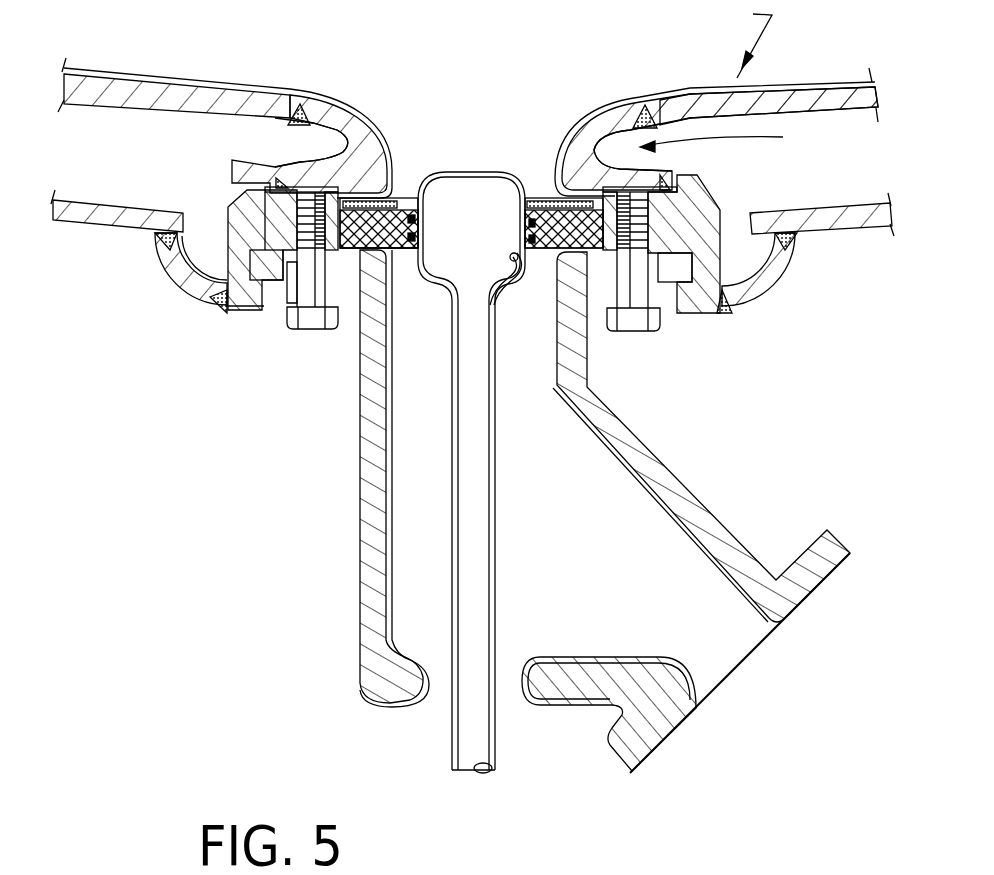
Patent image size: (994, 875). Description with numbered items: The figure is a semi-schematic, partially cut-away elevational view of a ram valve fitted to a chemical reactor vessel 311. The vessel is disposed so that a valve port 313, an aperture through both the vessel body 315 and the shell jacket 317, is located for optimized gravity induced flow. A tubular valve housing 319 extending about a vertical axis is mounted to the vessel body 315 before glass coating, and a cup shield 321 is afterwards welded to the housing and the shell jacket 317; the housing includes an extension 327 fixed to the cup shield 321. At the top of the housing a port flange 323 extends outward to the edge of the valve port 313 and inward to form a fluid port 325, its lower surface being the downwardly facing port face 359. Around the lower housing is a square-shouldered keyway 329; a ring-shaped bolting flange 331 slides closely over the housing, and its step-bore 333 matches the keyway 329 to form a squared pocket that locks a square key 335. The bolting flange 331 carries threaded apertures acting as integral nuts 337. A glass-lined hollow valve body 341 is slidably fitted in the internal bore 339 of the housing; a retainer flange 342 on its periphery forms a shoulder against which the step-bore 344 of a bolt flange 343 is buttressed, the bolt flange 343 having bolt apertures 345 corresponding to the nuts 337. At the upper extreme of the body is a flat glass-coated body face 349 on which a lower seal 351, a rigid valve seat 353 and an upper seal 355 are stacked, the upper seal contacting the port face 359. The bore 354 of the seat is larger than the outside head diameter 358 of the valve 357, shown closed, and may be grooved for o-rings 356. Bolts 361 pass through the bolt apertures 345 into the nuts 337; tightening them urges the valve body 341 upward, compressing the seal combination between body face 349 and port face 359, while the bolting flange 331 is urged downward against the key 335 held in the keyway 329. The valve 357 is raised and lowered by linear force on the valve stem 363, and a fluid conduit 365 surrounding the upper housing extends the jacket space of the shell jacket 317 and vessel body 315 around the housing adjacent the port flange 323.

The vessel 311 is at (745, 41).
The valve port 313 is at (643, 118).
The vessel body 315 is at (108, 78).
The shell jacket 317 is at (82, 218).
The valve housing 319 is at (335, 141).
The cup shield 321 is at (168, 258).
The port flange 323 is at (340, 110).
The fluid port 325 is at (384, 118).
The extension 327 is at (664, 168).
The keyway 329 is at (770, 287).
The bolting flange 331 is at (217, 297).
The step-bore 333 is at (233, 318).
The key 335 is at (720, 313).
The nuts 337 is at (265, 203).
The internal bore 339 is at (272, 213).
The valve body 341 is at (368, 490).
The retainer flange 342 is at (687, 320).
The bolt flange 343 is at (667, 312).
The step-bore 344 is at (272, 300).
The bolt apertures 345 is at (285, 312).
The body face 349 is at (600, 345).
The lower seal 351 is at (540, 200).
The valve seat 353 is at (492, 336).
The bore 354 is at (498, 292).
The upper seal 355 is at (554, 192).
The o-rings 356 is at (394, 252).
The valve 357 is at (481, 183).
The outside head diameter 358 is at (426, 190).
The port face 359 is at (389, 200).
The bolts 361 is at (308, 320).
The valve stem 363 is at (483, 572).
The fluid conduit 365 is at (738, 141).